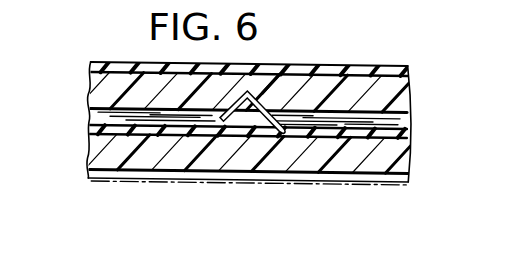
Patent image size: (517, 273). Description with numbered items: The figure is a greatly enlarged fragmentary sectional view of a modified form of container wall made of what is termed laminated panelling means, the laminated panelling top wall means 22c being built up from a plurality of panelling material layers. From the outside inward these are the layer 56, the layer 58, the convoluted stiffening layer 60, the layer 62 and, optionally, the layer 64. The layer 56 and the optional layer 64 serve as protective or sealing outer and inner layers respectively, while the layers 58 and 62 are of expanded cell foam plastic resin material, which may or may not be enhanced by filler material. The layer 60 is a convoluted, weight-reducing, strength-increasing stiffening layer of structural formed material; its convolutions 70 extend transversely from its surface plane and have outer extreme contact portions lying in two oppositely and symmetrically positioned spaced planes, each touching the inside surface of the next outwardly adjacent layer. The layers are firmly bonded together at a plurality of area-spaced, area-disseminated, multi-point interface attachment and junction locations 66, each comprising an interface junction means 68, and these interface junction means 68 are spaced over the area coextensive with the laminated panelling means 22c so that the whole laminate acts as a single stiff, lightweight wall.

The laminated panelling top wall means 22c is at (75, 97).
The layer 56 is at (408, 69).
The layer 58 is at (403, 97).
The convoluted stiffening layer 60 is at (88, 125).
The layer 62 is at (416, 152).
The optional layer 64 is at (123, 181).
The interface attachment and junction locations 66 is at (272, 97).
The interface junction means 68 is at (298, 122).
The convolutions 70 is at (261, 130).